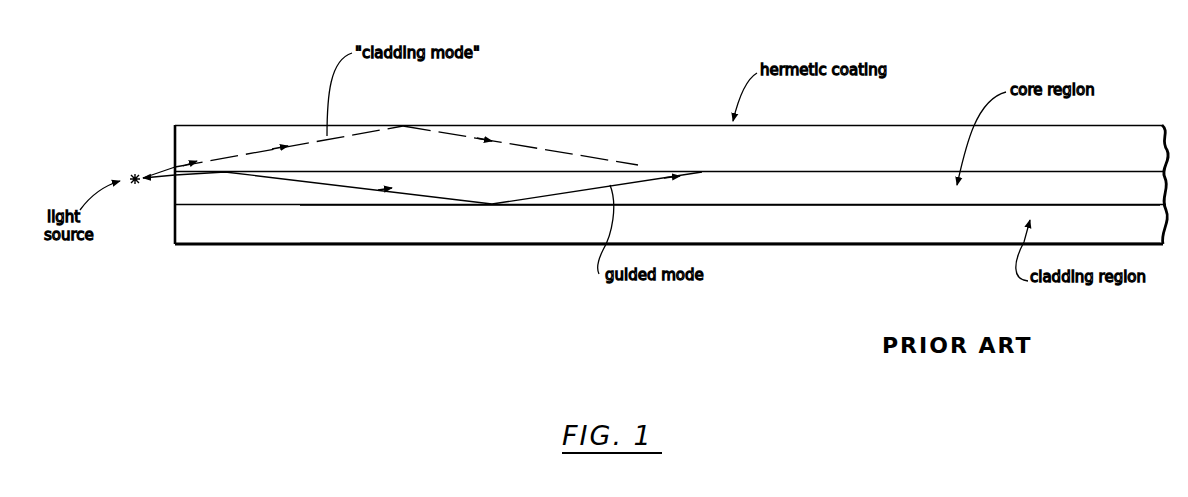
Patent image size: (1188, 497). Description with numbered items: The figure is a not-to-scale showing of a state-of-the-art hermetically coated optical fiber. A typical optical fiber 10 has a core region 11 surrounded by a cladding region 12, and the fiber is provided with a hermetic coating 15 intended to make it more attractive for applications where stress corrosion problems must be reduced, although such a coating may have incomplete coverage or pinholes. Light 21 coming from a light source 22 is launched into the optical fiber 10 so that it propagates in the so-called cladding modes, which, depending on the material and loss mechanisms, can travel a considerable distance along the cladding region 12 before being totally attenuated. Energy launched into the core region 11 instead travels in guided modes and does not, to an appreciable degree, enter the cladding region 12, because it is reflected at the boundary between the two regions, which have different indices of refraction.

The optical fiber 10 is at (293, 90).
The core region 11 is at (283, 192).
The cladding region 12 is at (367, 229).
The hermetic coating 15 is at (690, 126).
The light 21 is at (160, 171).
The light source 22 is at (124, 176).